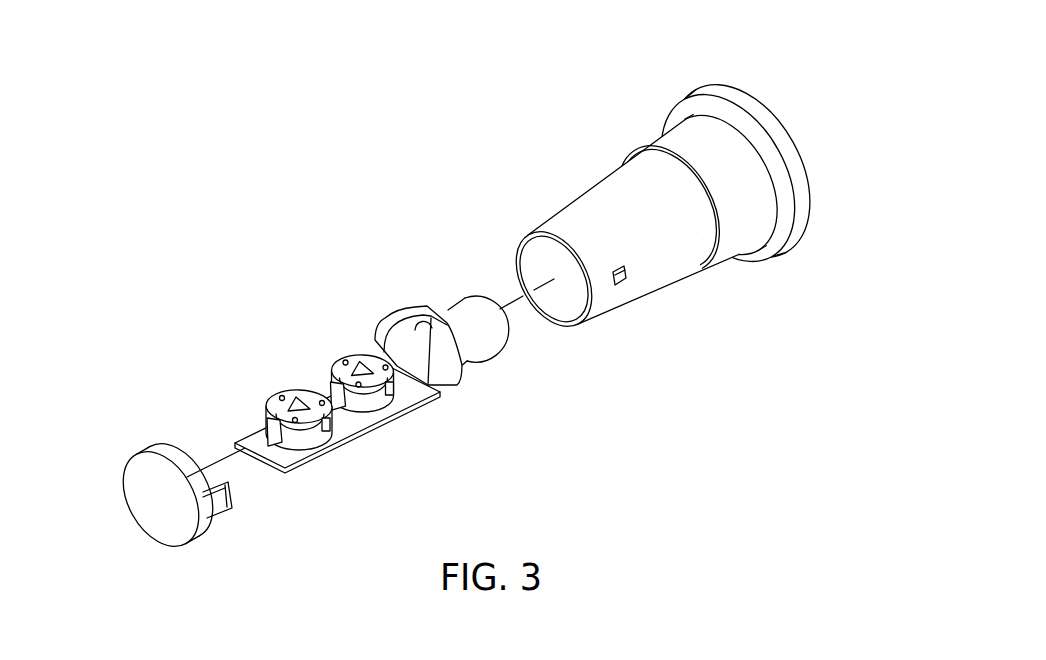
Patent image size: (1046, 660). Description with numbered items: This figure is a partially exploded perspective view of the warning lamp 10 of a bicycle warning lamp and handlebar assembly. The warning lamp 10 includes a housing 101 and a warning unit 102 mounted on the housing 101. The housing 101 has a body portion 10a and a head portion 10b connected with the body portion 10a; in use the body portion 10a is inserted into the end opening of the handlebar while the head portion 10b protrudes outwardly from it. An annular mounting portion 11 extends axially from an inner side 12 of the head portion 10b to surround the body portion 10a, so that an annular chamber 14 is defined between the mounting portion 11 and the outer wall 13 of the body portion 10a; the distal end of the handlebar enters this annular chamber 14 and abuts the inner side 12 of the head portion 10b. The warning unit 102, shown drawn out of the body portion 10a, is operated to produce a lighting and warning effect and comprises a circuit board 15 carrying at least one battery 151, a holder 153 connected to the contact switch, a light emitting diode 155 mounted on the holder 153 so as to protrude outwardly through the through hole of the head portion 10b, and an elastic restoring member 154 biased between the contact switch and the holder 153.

The warning lamp 10 is at (595, 234).
The housing 101 is at (669, 234).
The body portion 10a is at (620, 231).
The head portion 10b is at (732, 210).
The mounting portion 11 is at (683, 140).
The inner side 12 is at (762, 140).
The outer wall 13 is at (620, 216).
The annular chamber 14 is at (640, 160).
The warning unit 102 is at (341, 387).
The circuit board 15 is at (305, 468).
The battery 151 is at (312, 436).
The holder 153 is at (465, 373).
The elastic restoring member 154 is at (444, 372).
The light emitting diode (LED) 155 is at (464, 309).